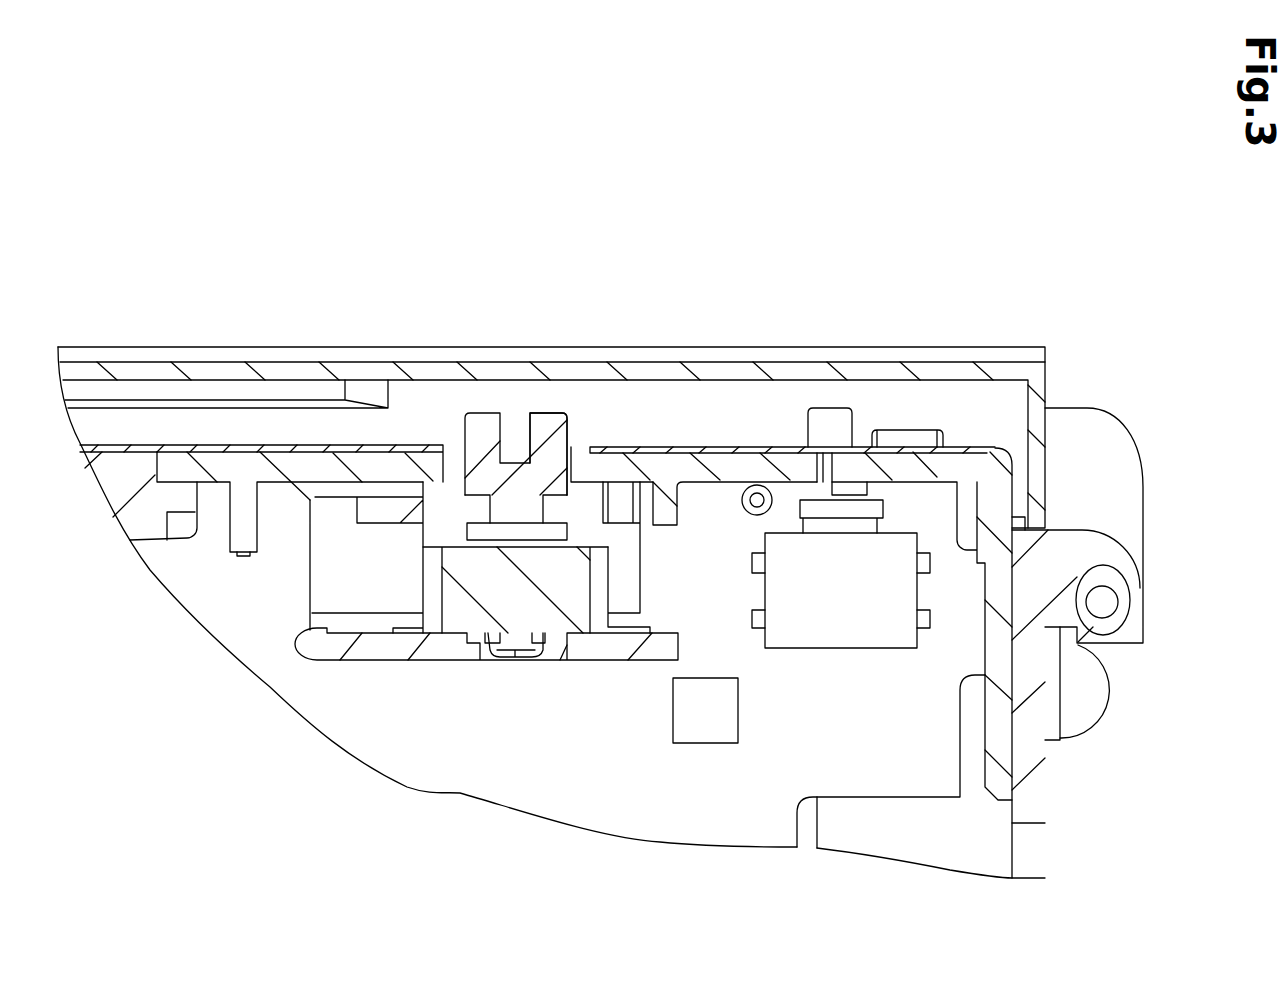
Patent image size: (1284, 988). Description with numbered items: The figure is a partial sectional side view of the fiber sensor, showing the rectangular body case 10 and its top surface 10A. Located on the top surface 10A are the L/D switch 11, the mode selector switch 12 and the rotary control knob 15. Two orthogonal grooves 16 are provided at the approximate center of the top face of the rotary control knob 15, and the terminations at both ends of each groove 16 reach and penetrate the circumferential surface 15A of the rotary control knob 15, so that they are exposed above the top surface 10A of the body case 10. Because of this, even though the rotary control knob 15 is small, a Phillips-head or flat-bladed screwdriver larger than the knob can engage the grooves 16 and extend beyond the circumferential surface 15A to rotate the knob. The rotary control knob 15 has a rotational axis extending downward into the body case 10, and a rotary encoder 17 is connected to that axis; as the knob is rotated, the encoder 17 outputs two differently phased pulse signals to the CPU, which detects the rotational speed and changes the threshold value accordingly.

The body case 10 is at (830, 317).
The top surface 10A is at (715, 446).
The L/D switch 11 is at (852, 412).
The mode selector switch 12 is at (917, 428).
The rotary control knob 15 is at (452, 430).
The circumferential surface 15A is at (568, 438).
The groove 16 is at (515, 427).
The encoder 17 is at (537, 610).